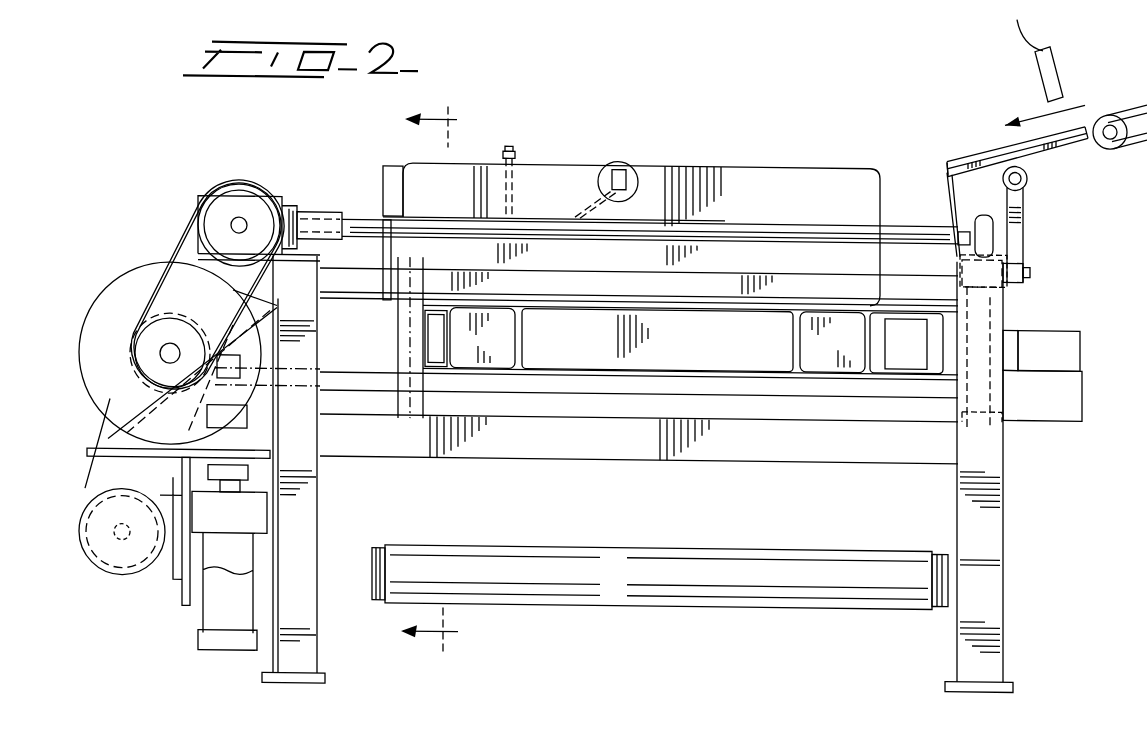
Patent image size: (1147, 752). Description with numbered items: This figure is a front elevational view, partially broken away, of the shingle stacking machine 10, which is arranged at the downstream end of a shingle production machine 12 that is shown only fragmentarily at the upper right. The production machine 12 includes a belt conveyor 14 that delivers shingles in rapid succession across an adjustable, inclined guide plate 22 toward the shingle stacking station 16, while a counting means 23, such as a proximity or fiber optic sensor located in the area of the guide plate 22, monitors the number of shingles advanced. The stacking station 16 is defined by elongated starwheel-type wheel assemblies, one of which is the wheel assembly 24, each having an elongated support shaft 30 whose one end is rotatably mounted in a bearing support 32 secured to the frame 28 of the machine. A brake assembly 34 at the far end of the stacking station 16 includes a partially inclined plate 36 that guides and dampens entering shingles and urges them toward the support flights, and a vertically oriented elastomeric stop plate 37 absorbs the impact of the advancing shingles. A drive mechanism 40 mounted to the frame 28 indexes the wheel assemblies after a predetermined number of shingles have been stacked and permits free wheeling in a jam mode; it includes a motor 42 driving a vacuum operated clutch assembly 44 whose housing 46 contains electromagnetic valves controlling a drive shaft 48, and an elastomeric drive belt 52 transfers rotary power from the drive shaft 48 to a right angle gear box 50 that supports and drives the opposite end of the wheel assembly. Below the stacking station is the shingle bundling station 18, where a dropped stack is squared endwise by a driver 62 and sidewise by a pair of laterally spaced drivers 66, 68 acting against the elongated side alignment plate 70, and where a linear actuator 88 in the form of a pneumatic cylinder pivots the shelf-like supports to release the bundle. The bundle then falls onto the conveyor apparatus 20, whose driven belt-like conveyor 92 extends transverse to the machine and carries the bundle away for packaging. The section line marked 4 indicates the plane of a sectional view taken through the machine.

The section line 4- 4 is at (434, 377).
The shingle stacking machine 10 is at (637, 139).
The shingle production machine 12 is at (1120, 116).
The belt conveyor 14 is at (1140, 141).
The shingle stacking station 16 is at (631, 208).
The shingle bundling station 18 is at (690, 340).
The conveyor apparatus 20 is at (660, 555).
The guide plate 22 is at (947, 153).
The counting means 23 is at (1037, 44).
The wheel assembly 24 is at (730, 187).
The frame 28 is at (995, 513).
The support shaft 30 is at (908, 226).
The bearing support 32 is at (985, 208).
The brake assembly 34 is at (573, 163).
The inclined plate 36 is at (557, 200).
The stop plate 37 is at (410, 193).
The drive mechanism 40 is at (172, 316).
The motor 42 is at (108, 576).
The clutch assembly 44 is at (90, 384).
The housing 46 is at (93, 301).
The drive shaft 48 is at (163, 352).
The right angle gear box 50 is at (214, 197).
The elastomeric drive belt 52 is at (185, 237).
The driver 62 is at (1060, 317).
The driver 66 is at (832, 342).
The driver 68 is at (482, 338).
The side alignment plate 70 is at (657, 339).
The linear actuator 88 is at (210, 620).
The belt-like conveyor 92 is at (705, 543).